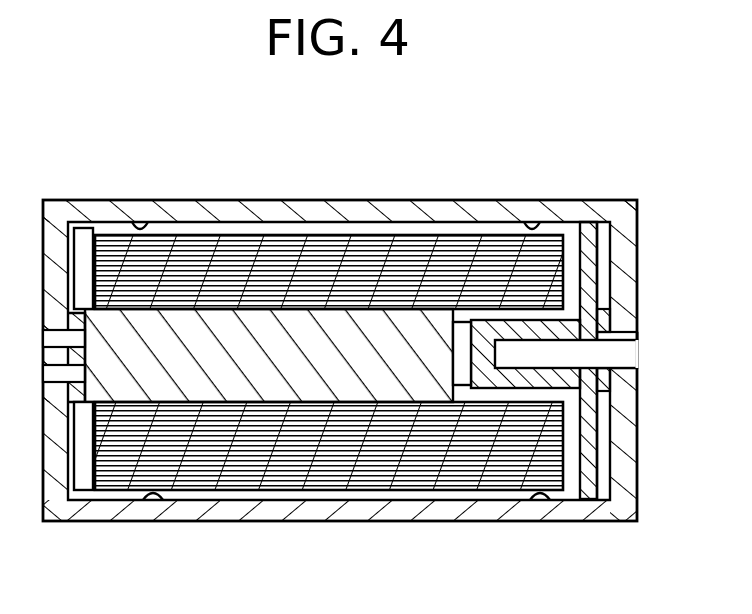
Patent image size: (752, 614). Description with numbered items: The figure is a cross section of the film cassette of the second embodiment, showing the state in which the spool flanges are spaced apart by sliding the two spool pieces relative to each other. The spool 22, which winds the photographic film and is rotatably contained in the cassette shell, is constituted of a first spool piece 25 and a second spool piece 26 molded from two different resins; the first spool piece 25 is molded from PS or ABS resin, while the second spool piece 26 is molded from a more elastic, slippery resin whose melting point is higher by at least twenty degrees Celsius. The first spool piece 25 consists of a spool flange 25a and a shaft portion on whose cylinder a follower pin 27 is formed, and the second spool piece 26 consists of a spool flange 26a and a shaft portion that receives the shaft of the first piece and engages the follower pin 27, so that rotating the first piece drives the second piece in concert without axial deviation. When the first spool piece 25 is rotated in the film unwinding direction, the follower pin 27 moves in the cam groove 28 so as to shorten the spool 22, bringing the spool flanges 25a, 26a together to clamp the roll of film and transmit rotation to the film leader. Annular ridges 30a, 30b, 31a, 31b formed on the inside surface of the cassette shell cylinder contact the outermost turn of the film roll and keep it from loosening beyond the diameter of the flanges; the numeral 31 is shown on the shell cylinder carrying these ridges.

The spool 22 is at (240, 420).
The first spool piece 25 is at (628, 352).
The spool flange 25a is at (600, 220).
The second spool piece 26 is at (347, 386).
The spool flange 26a is at (88, 230).
The follower pin 27 is at (508, 315).
The cam groove 28 is at (470, 322).
The annular ridge 30a is at (541, 498).
The annular ridge 30b is at (152, 498).
The housing 31 is at (280, 200).
The annular ridge 31a is at (532, 230).
The annular ridge 31b is at (141, 230).